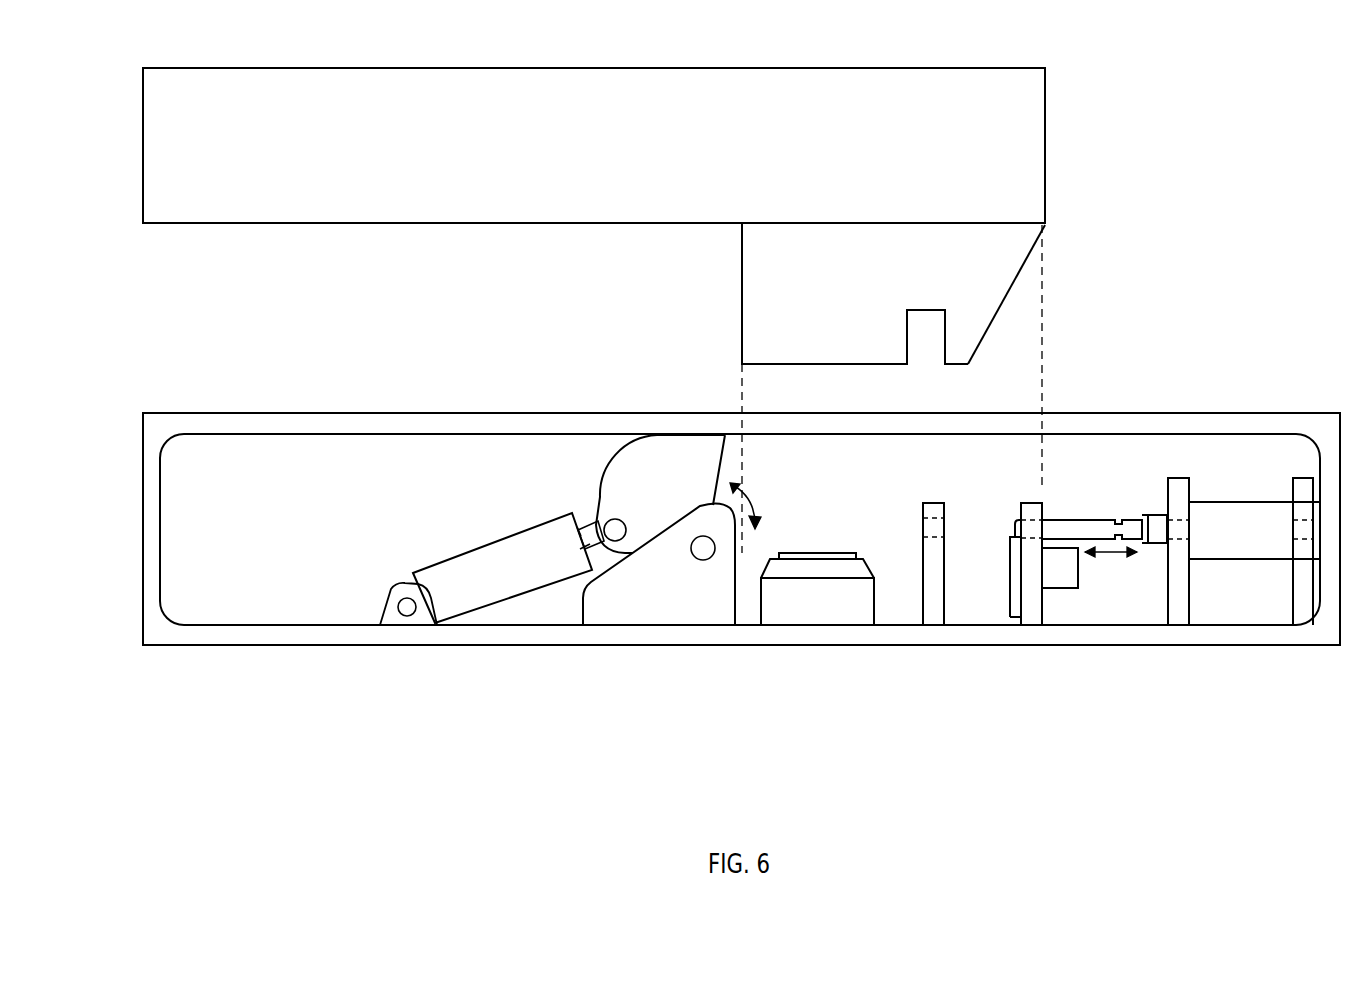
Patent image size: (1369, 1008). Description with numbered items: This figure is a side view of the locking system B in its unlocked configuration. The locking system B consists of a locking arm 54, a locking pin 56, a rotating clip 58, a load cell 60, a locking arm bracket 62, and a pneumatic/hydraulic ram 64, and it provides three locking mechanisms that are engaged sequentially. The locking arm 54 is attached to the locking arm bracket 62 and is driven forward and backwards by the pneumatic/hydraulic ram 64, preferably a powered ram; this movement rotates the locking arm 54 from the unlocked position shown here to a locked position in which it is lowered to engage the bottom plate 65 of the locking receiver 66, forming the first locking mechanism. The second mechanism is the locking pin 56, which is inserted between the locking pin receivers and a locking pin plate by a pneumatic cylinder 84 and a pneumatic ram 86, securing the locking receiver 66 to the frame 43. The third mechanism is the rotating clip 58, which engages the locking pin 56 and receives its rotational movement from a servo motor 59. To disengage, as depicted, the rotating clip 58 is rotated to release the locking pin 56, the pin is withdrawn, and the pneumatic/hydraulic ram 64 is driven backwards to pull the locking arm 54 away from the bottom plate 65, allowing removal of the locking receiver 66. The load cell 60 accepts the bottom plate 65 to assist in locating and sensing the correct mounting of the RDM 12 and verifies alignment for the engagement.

The RDM 12 is at (1047, 153).
The locking receiver 66 is at (1013, 288).
The bottom plate 65 is at (788, 367).
The frame 43 is at (222, 635).
The locking arm 54 is at (650, 467).
The locking arm bracket 62 is at (677, 587).
The pneumatic/hydraulic ram 64 is at (498, 575).
The load cell 60 is at (815, 598).
The rotating clip 58 is at (1015, 576).
The locking pin 56 is at (1085, 525).
The pneumatic ram 86 is at (1155, 528).
The servo motor 59 is at (1070, 585).
The pneumatic cylinder 84 is at (1228, 527).
The locking system B is at (1062, 692).